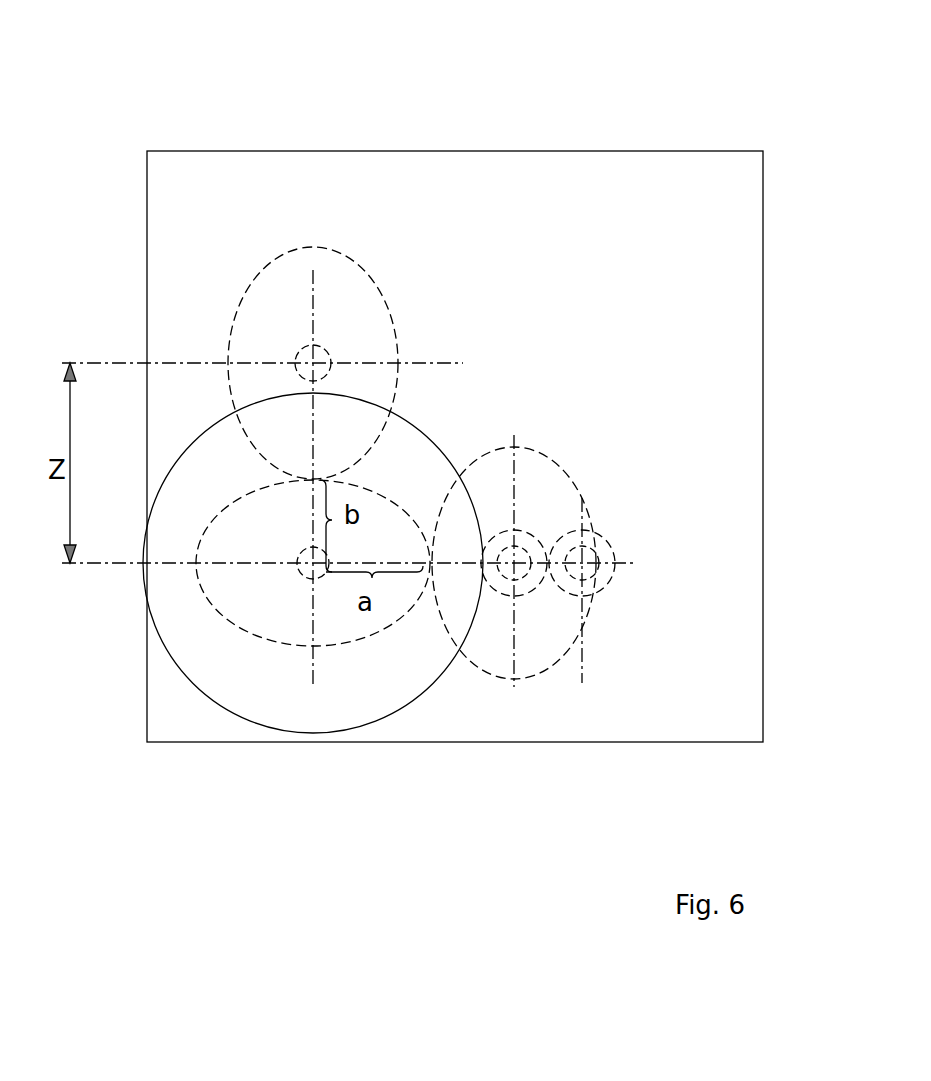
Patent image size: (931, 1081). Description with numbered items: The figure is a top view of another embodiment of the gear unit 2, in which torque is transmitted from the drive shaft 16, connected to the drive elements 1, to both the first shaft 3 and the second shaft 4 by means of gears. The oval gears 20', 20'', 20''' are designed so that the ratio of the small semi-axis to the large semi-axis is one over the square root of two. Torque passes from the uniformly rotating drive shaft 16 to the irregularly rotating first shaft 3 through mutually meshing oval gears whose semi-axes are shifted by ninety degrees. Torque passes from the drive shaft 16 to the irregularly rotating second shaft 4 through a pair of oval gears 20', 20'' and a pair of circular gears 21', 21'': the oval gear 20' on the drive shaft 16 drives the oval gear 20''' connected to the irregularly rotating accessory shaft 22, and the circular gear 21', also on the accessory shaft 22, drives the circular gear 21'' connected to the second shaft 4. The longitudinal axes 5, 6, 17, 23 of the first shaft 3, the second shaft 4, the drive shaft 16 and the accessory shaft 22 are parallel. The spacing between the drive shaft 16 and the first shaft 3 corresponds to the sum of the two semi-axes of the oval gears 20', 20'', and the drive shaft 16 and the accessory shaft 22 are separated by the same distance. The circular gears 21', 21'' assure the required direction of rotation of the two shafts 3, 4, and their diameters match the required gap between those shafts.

The drive elements 1 is at (275, 700).
The gear unit 2 is at (440, 393).
The first shaft 3 is at (311, 360).
The second shaft 4 is at (597, 573).
The longitudinal axis 5 is at (310, 366).
The longitudinal axis 6 is at (585, 560).
The drive shaft 16 is at (310, 570).
The longitudinal axis 17 is at (310, 573).
The oval gear 20' is at (231, 608).
The oval gear 20'' is at (234, 297).
The oval gear 20''' is at (525, 658).
The circular gear 21' is at (618, 636).
The circular gear 21'' is at (694, 666).
The accessory shaft 22 is at (505, 568).
The longitudinal axis 23 is at (514, 575).